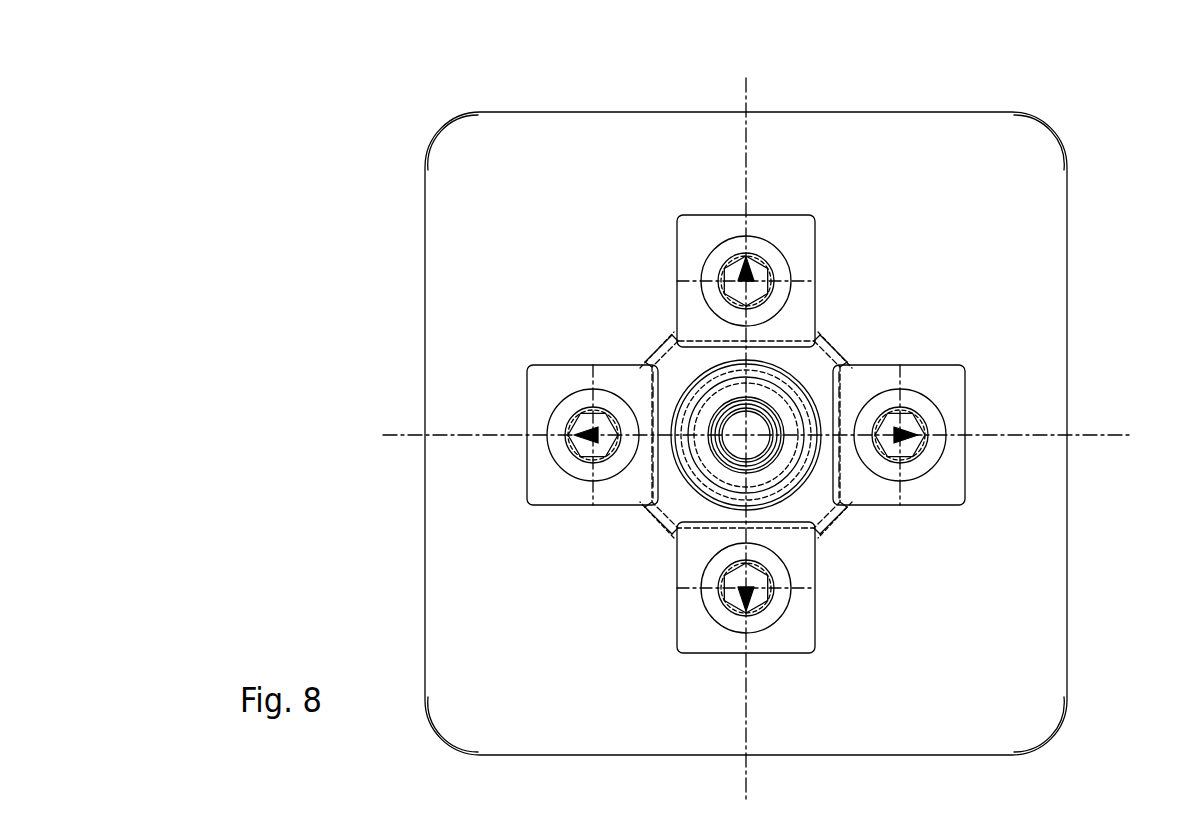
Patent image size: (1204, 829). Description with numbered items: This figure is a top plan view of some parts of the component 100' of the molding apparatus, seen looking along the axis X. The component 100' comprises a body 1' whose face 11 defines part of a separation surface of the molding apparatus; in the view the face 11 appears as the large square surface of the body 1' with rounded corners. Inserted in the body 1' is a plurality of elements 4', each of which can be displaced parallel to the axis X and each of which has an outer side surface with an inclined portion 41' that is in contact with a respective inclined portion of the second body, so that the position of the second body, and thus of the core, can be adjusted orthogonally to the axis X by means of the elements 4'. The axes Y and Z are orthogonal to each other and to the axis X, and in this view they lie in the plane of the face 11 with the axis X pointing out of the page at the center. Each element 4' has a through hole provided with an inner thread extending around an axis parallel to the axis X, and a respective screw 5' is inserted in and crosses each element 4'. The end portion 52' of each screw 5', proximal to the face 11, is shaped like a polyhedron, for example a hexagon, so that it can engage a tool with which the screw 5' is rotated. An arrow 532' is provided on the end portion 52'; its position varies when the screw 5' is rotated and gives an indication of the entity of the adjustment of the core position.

The component 100' is at (702, 405).
The body 1' is at (806, 433).
The face 11 is at (900, 290).
The element 4' is at (753, 434).
The screw 5' is at (732, 570).
The inclined portion 41' is at (724, 290).
The end portion 52' is at (935, 212).
The arrow 532' is at (905, 156).
The axis X is at (772, 432).
The axis Y is at (748, 98).
The axis Z is at (388, 434).